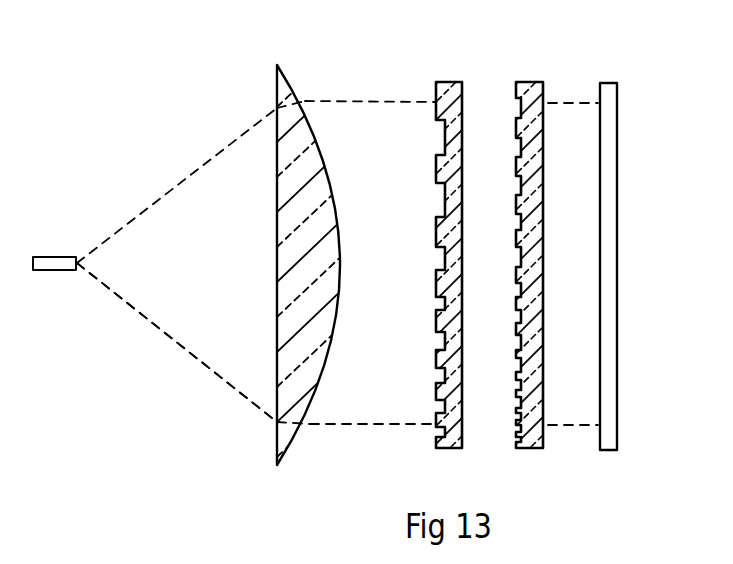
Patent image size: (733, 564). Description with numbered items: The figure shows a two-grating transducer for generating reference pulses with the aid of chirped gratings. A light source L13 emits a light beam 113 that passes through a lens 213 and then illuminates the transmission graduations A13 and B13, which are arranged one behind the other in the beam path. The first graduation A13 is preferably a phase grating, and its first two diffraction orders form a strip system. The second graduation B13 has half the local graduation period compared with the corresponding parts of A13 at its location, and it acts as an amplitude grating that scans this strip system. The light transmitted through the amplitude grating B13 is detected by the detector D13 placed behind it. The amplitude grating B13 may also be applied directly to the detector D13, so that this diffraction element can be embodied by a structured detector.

The light source L13 is at (60, 257).
The light beam 113 is at (189, 369).
The collimating lens 213 is at (282, 437).
The transmission graduation A13 is at (447, 84).
The amplitude grating B13 is at (533, 82).
The detector D13 is at (617, 257).